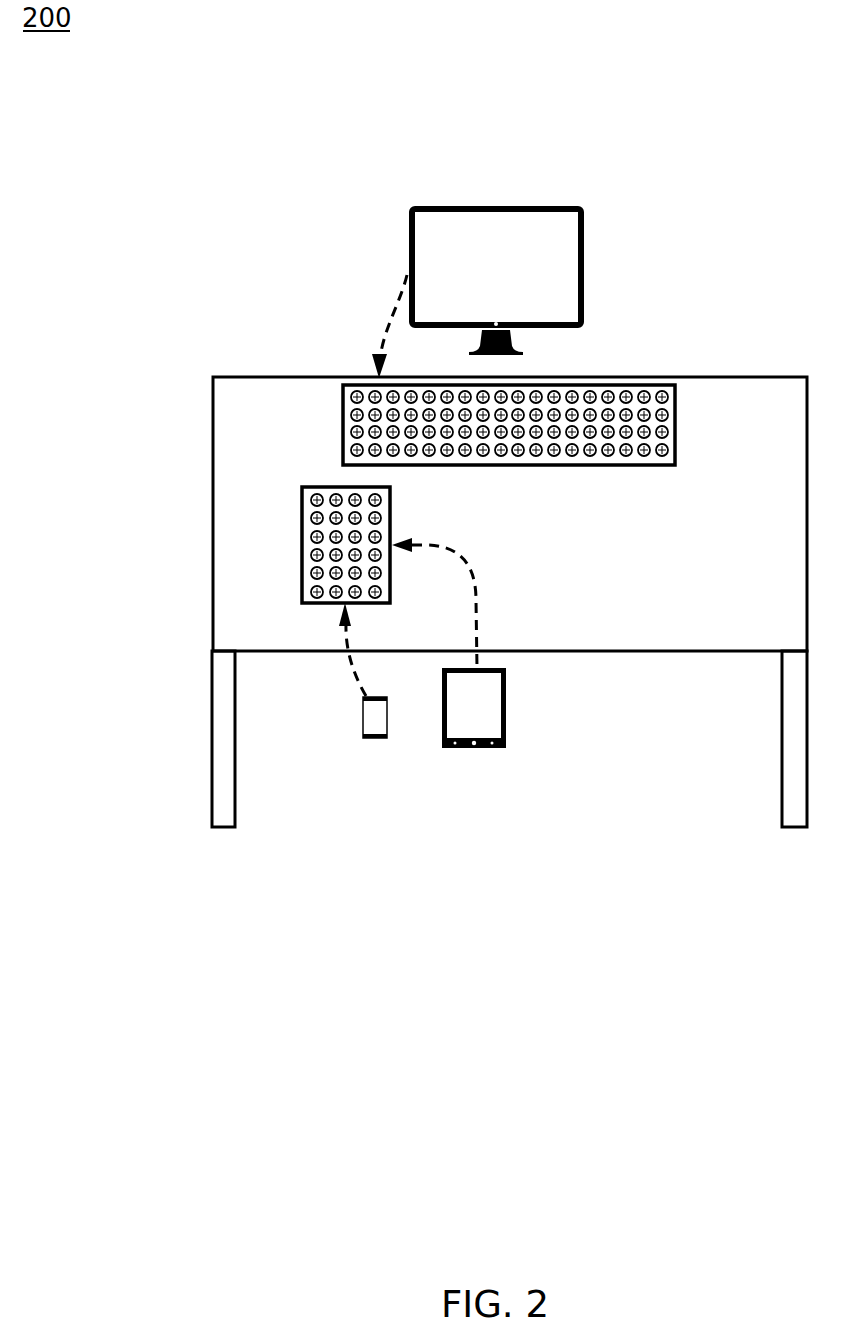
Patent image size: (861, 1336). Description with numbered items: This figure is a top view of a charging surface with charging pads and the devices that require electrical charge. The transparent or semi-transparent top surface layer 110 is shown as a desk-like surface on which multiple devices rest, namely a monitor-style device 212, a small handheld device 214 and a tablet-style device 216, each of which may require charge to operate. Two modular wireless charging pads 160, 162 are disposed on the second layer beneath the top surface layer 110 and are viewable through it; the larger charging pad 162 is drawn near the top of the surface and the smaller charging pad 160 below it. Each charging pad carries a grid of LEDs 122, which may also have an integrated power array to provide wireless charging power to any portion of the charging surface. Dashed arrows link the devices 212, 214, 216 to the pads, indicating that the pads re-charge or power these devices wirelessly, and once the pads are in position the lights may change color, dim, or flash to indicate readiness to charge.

The top surface layer 110 is at (216, 406).
The device 212 is at (432, 234).
The LEDs 122 is at (346, 399).
The charging pad 162 is at (346, 465).
The charging pad 160 is at (306, 603).
The device 214 is at (365, 730).
The device 216 is at (448, 749).